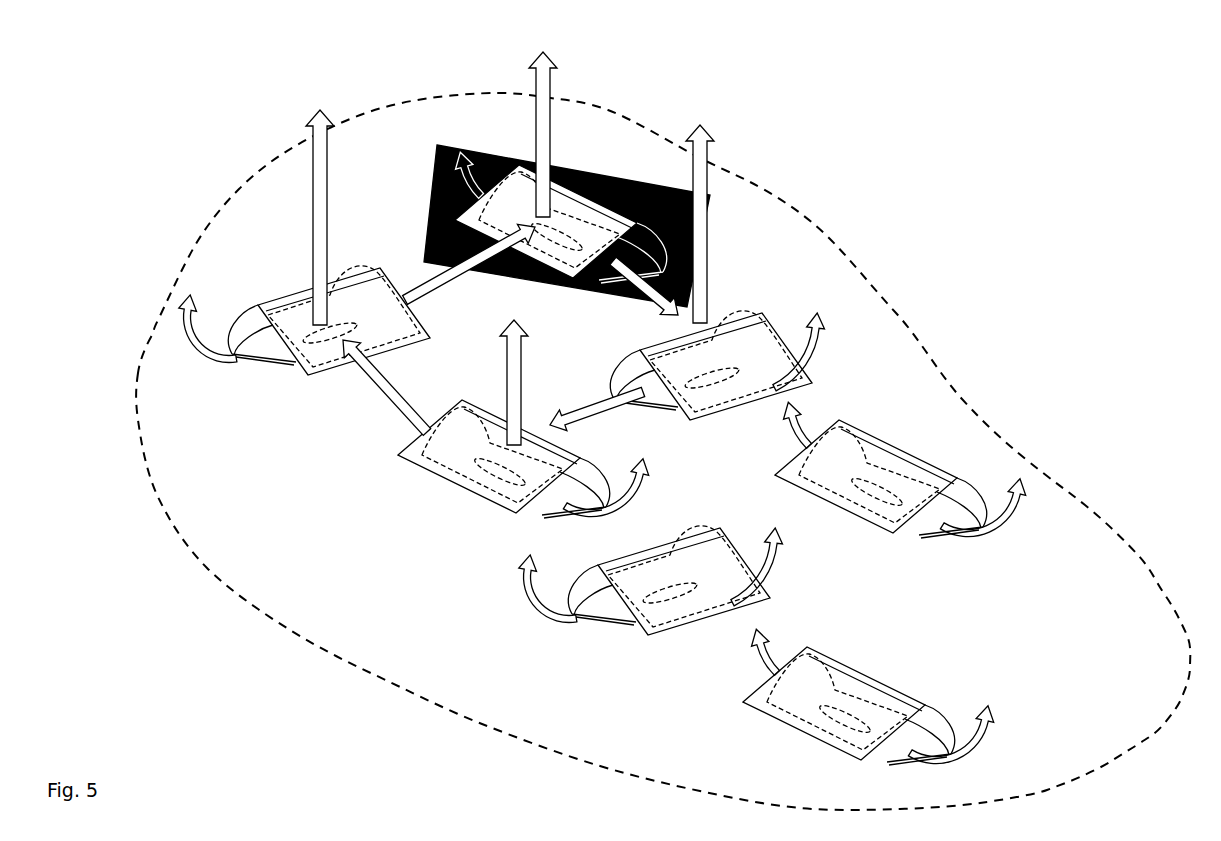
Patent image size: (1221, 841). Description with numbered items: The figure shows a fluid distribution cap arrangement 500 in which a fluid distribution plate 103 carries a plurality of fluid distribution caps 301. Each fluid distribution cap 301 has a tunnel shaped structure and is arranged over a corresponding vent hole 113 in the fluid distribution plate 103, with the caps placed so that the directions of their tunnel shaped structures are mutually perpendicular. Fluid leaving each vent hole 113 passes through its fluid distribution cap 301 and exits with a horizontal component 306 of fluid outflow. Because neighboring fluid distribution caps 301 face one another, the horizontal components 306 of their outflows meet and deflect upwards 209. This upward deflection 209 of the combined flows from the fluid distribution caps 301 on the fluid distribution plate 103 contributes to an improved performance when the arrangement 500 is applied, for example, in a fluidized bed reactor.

The fluid distribution cap arrangement 500 is at (216, 160).
The fluid distribution plate 103 is at (232, 525).
The fluid distribution cap 301 is at (357, 280).
The vent hole 113 is at (319, 348).
The upward deflection 209 is at (510, 230).
The horizontal component of fluid outflow 306 is at (510, 335).